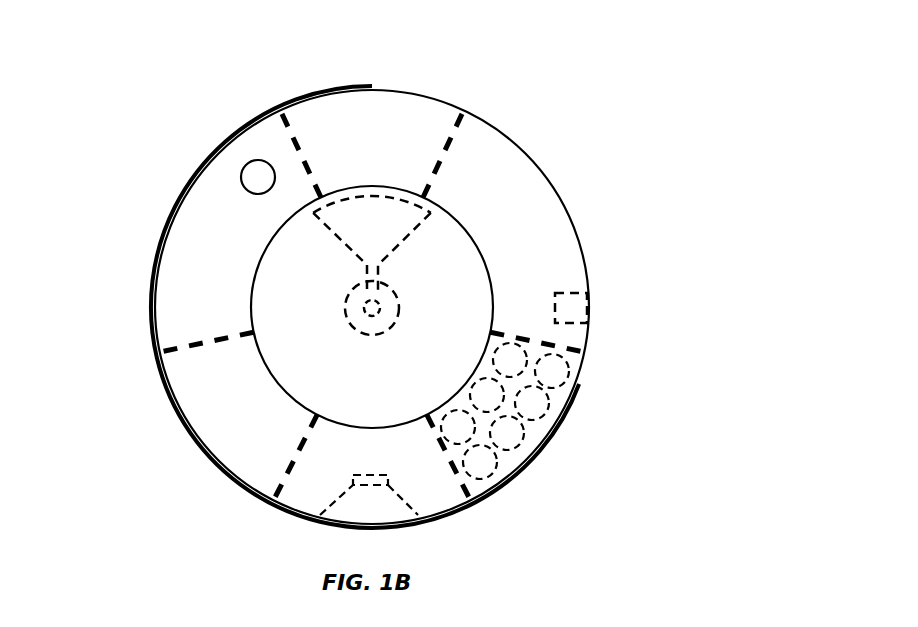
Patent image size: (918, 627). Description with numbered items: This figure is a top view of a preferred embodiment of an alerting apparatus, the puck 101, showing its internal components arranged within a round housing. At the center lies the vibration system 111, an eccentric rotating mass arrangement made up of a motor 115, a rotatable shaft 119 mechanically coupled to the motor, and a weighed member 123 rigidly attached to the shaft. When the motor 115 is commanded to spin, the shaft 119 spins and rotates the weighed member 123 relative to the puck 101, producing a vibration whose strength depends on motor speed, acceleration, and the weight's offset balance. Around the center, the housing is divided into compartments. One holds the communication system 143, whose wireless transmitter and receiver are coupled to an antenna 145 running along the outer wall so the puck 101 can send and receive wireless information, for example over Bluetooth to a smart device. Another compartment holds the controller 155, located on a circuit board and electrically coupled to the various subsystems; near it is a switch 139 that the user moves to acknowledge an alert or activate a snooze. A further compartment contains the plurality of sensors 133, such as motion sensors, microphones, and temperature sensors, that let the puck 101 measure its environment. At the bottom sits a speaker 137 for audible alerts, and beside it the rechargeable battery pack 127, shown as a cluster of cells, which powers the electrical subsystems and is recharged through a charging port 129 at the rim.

The puck 101 is at (192, 120).
The antenna 145 is at (328, 87).
The communication system 143 is at (373, 140).
The controller 155 is at (221, 237).
The plurality of sensors 133 is at (234, 404).
The speaker 137 is at (369, 495).
The switch 139 is at (242, 178).
The weighed member 123 is at (335, 237).
The motor 115 is at (400, 307).
The rotatable shaft 119 is at (372, 308).
The vibration system 111 is at (333, 342).
The charging port 129 is at (590, 307).
The rechargeable battery pack 127 is at (533, 432).